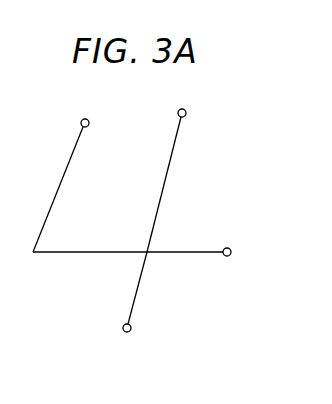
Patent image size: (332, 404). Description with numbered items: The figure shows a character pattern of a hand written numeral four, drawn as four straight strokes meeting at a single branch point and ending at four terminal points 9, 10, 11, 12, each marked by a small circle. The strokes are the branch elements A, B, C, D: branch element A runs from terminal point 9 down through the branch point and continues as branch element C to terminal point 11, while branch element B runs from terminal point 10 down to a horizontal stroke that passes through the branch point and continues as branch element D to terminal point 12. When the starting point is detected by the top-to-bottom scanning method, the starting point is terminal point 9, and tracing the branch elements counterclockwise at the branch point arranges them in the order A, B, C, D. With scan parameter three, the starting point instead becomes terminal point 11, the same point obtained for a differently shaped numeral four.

The starting point 9 is at (186, 114).
The terminal point 10 is at (81, 121).
The terminal point 11 is at (131, 329).
The terminal point 12 is at (230, 249).
The branch element A is at (165, 180).
The branch element B is at (77, 252).
The branch element C is at (133, 300).
The branch element D is at (195, 252).